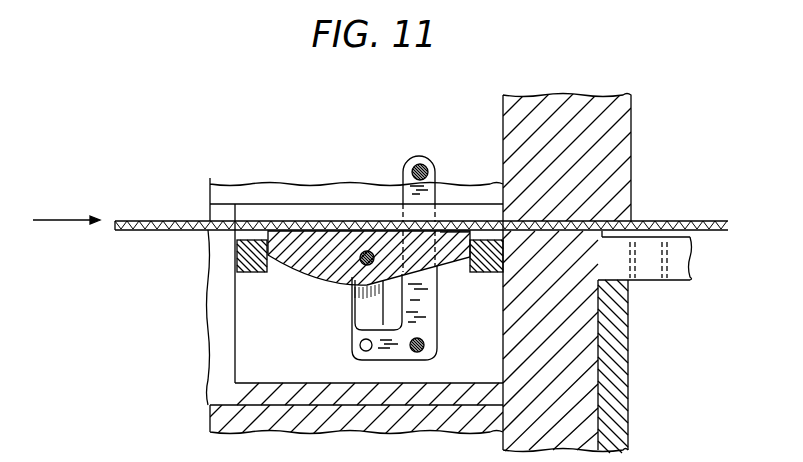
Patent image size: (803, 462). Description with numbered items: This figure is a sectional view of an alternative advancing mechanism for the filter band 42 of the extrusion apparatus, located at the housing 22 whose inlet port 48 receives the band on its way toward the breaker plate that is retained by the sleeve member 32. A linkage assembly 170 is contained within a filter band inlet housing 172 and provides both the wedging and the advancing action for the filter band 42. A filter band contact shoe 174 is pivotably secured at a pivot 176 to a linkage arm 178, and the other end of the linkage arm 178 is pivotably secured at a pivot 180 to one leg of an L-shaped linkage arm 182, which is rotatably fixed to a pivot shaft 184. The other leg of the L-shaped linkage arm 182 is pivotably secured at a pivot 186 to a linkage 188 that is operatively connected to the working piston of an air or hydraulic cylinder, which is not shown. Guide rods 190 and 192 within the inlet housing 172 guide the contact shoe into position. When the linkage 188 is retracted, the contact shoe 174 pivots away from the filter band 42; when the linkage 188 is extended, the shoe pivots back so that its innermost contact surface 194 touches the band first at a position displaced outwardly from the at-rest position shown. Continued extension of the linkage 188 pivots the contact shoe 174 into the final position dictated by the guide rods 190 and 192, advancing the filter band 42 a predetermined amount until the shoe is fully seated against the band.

The housing 22 is at (631, 128).
The sleeve member 32 is at (629, 370).
The filter band 42 is at (148, 216).
The inlet port 48 is at (621, 227).
The linkage assembly 170 is at (328, 322).
The filter band inlet housing 172 is at (219, 418).
The filter band contact shoe 174 is at (292, 262).
The pivot 176 is at (358, 261).
The linkage arm 178 is at (353, 328).
The pivot 180 is at (368, 352).
The L-shaped linkage arm 182 is at (432, 305).
The pivot shaft 184 is at (423, 350).
The pivot 186 is at (414, 167).
The linkage 188 is at (272, 181).
The guide rod 190 is at (238, 255).
The guide rod 192 is at (502, 265).
The innermost contact surface 194 is at (448, 229).